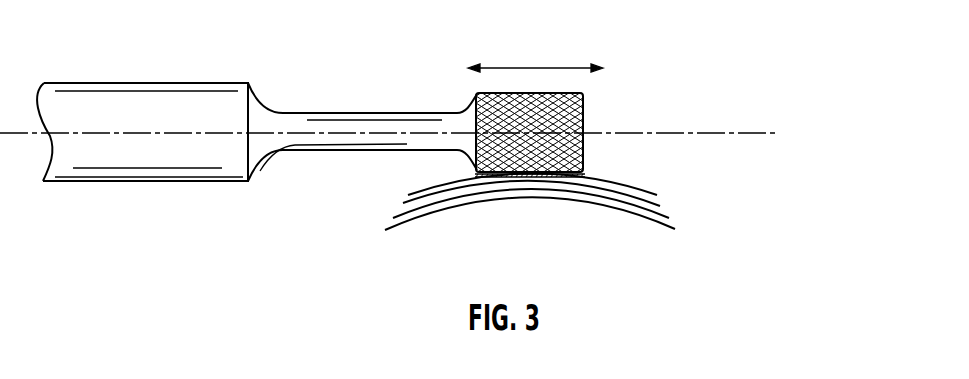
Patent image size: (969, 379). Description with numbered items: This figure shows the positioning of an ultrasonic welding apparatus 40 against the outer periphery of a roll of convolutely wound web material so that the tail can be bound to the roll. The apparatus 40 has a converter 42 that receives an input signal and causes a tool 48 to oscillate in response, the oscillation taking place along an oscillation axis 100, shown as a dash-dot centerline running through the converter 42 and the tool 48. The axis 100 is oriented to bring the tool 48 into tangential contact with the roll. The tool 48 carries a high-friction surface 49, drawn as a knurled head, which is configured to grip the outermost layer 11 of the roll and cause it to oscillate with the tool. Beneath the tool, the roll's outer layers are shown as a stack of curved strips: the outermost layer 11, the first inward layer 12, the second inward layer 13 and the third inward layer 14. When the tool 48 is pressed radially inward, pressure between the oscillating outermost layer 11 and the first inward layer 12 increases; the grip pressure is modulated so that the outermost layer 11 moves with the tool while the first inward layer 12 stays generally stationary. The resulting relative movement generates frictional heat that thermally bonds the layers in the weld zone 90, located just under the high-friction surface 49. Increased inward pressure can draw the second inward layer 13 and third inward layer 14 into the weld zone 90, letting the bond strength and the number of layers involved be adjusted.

The ultrasonic welding apparatus 40 is at (363, 58).
The converter 42 is at (428, 142).
The high-friction surface 49 is at (485, 92).
The tool 48 is at (603, 98).
The oscillation axis 100 is at (750, 133).
The weld zone 90 is at (504, 178).
The outermost layer 11 is at (627, 181).
The first inward layer 12 is at (658, 203).
The second inward layer 13 is at (662, 217).
The third inward layer 14 is at (648, 224).